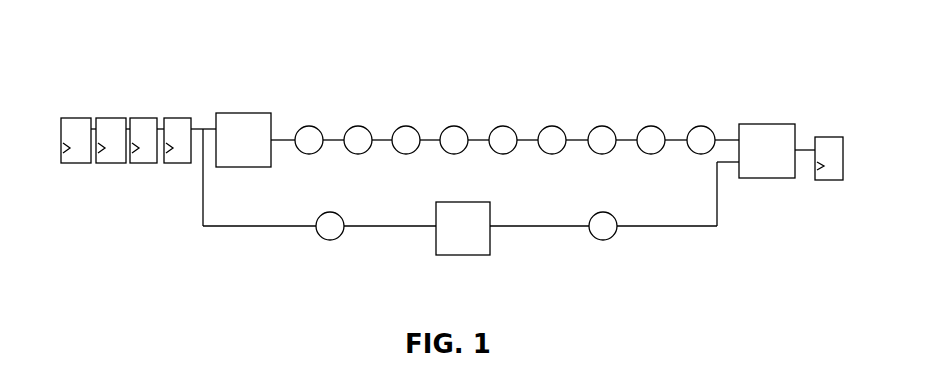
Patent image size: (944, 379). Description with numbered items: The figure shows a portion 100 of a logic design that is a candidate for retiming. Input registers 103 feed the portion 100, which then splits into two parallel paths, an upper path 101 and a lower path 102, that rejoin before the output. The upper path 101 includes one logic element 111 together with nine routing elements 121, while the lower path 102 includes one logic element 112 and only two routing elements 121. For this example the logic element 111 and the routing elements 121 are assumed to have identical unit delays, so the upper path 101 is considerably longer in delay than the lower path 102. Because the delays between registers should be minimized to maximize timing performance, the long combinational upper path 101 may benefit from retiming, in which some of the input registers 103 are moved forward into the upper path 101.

The portion of a logic design 100 is at (118, 45).
The upper path 101 is at (424, 164).
The lower path 102 is at (471, 222).
The input registers 103 is at (73, 163).
The logic element 111 is at (243, 113).
The logic element 112 is at (463, 255).
The routing elements 121 is at (303, 126).